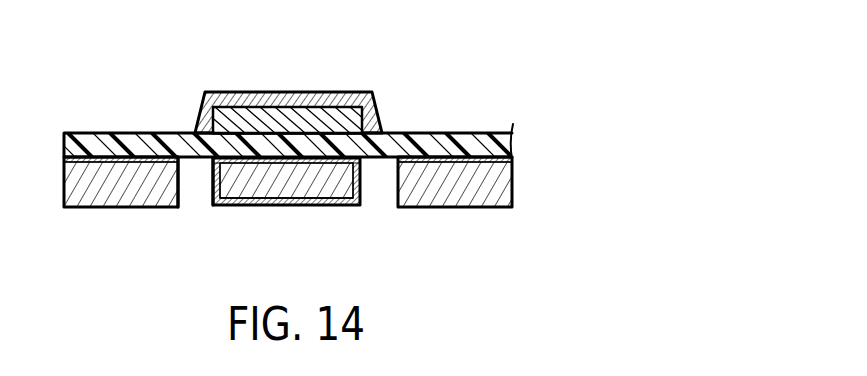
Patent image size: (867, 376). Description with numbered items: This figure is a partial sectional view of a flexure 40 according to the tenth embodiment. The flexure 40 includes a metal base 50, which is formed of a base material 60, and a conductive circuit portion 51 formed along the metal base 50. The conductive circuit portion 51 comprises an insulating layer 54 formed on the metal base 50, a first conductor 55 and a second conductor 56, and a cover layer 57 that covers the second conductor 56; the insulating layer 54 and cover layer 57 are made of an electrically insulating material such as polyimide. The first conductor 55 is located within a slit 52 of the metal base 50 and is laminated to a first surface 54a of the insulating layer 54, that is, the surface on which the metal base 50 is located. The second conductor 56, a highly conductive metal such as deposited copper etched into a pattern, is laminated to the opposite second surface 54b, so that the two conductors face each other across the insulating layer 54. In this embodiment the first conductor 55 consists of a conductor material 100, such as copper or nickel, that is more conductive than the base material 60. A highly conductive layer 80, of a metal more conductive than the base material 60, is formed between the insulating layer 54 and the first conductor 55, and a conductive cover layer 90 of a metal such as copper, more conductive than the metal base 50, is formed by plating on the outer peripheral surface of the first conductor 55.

The flexure 40 is at (481, 88).
The conductive circuit portion 51 is at (185, 103).
The cover layer 57 is at (243, 90).
The second conductor 56 is at (333, 106).
The second surface 54b is at (288, 132).
The insulating layer 54 is at (431, 133).
The first surface 54a is at (233, 205).
The metal base 50 is at (78, 186).
The base material 60 is at (486, 184).
The highly conductive layer 80 is at (131, 163).
The slit 52 is at (187, 186).
The first conductor 55 is at (331, 188).
The conductive cover layer 90 is at (268, 205).
The conductor material 100 is at (307, 186).